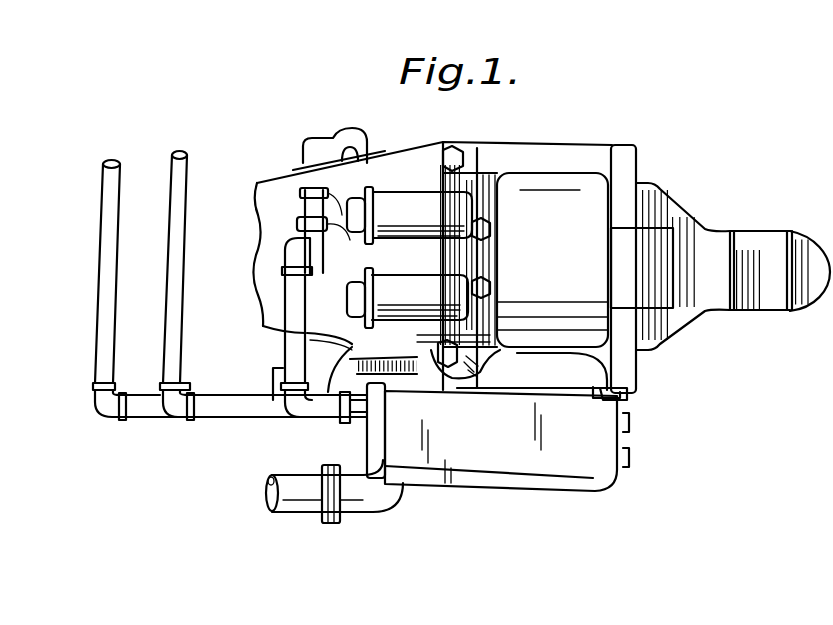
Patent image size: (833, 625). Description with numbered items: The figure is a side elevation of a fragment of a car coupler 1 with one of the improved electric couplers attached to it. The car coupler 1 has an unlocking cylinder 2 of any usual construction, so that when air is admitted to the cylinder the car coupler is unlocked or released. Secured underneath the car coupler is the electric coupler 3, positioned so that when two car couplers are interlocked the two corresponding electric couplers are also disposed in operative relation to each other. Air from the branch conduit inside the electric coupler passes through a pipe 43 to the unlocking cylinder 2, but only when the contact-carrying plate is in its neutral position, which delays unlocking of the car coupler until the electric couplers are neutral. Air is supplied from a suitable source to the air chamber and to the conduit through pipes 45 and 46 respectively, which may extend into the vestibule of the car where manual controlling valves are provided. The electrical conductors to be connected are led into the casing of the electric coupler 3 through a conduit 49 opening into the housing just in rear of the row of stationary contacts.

The car coupler 1 is at (552, 153).
The unlocking cylinder 2 is at (338, 215).
The electric coupler 3 is at (535, 460).
The pipe 43 is at (293, 345).
The pipe 45 is at (107, 283).
The pipe 46 is at (188, 213).
The conduit 49 is at (303, 497).